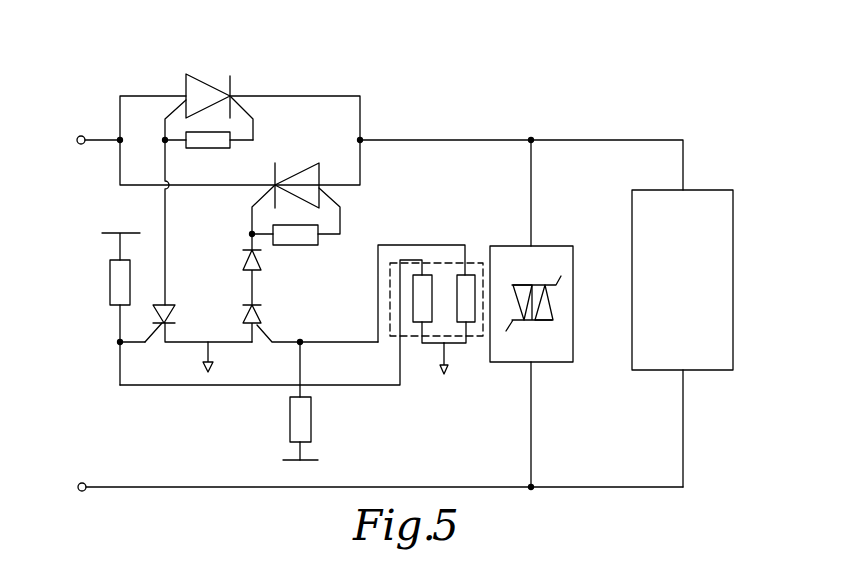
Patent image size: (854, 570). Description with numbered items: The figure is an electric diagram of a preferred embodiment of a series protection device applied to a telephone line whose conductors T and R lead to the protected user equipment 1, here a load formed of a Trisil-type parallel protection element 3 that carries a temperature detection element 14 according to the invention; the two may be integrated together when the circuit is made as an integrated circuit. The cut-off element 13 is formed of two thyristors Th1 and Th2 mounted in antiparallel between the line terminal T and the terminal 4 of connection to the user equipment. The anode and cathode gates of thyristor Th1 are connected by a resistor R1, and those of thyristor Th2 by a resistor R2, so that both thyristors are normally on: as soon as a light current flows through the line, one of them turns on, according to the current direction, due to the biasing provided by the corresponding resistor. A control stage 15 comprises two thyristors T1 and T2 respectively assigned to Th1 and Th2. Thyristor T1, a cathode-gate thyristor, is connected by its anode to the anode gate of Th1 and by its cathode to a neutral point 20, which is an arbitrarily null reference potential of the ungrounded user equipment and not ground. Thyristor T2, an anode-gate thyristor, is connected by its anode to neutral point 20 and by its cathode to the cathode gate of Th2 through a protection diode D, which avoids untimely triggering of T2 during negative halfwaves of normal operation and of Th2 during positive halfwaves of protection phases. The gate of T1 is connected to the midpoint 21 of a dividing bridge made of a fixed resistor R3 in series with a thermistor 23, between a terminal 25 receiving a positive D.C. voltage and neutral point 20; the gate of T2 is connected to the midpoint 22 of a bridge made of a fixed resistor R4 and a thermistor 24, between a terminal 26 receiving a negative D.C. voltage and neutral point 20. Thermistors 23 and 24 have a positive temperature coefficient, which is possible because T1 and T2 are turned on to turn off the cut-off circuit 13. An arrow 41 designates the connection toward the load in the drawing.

The user equipment 1 is at (727, 207).
The parallel protection element 3 is at (573, 292).
The terminal of connection to the user equipment 4 is at (531, 140).
The cut-off element 13 is at (265, 164).
The temperature detection element 14 is at (441, 298).
The control stage 15 is at (306, 298).
The neutral point 20 is at (208, 353).
The midpoint of resistive dividing bridge 21 is at (120, 342).
The midpoint of resistive dividing bridge 22 is at (300, 342).
The thermistor 23 is at (420, 317).
The thermistor 24 is at (467, 317).
The terminal of application of positive voltage 25 is at (103, 232).
The terminal of application of negative voltage 26 is at (313, 458).
The load connection 41 is at (552, 329).
The telephone line conductor T is at (83, 133).
The telephone line conductor R is at (82, 483).
The thyristor Th1 is at (207, 85).
The thyristor Th2 is at (295, 164).
The resistor R1 is at (198, 148).
The resistor R2 is at (293, 245).
The fixed resistor R3 is at (110, 280).
The fixed resistor R4 is at (311, 413).
The thyristor T1 is at (170, 316).
The thyristor T2 is at (263, 315).
The protection diode D is at (242, 258).